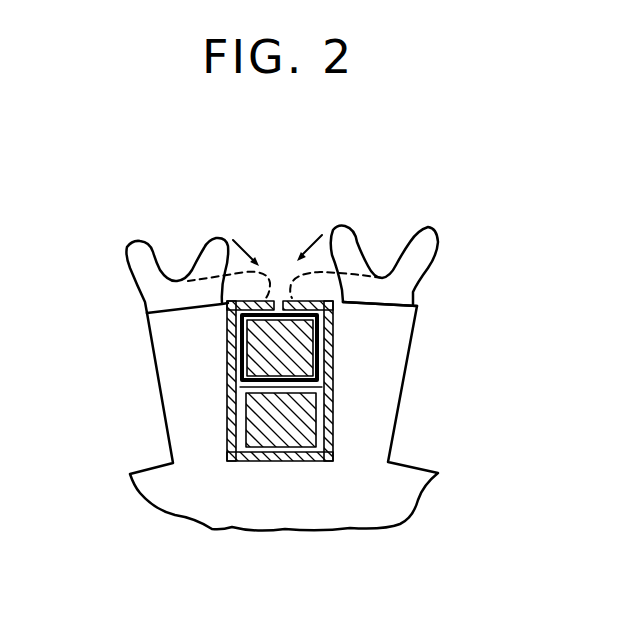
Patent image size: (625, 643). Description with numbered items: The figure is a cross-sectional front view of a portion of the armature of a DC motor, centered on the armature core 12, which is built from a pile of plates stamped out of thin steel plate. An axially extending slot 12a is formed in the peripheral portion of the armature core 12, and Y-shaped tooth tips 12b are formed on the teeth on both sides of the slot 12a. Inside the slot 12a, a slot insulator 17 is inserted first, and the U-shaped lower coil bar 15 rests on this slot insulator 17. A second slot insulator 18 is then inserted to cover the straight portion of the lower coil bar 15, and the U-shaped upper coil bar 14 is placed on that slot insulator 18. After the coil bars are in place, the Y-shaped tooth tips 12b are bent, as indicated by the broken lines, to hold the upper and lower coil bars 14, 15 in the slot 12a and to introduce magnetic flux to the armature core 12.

The armature core 12 is at (405, 488).
The slot 12a is at (288, 447).
The Y-shaped tooth tip 12b is at (140, 248).
The upper coil bar 14 is at (318, 332).
The lower coil bar 15 is at (300, 422).
The slot insulator 17 is at (330, 365).
The slot insulator 18 is at (230, 351).